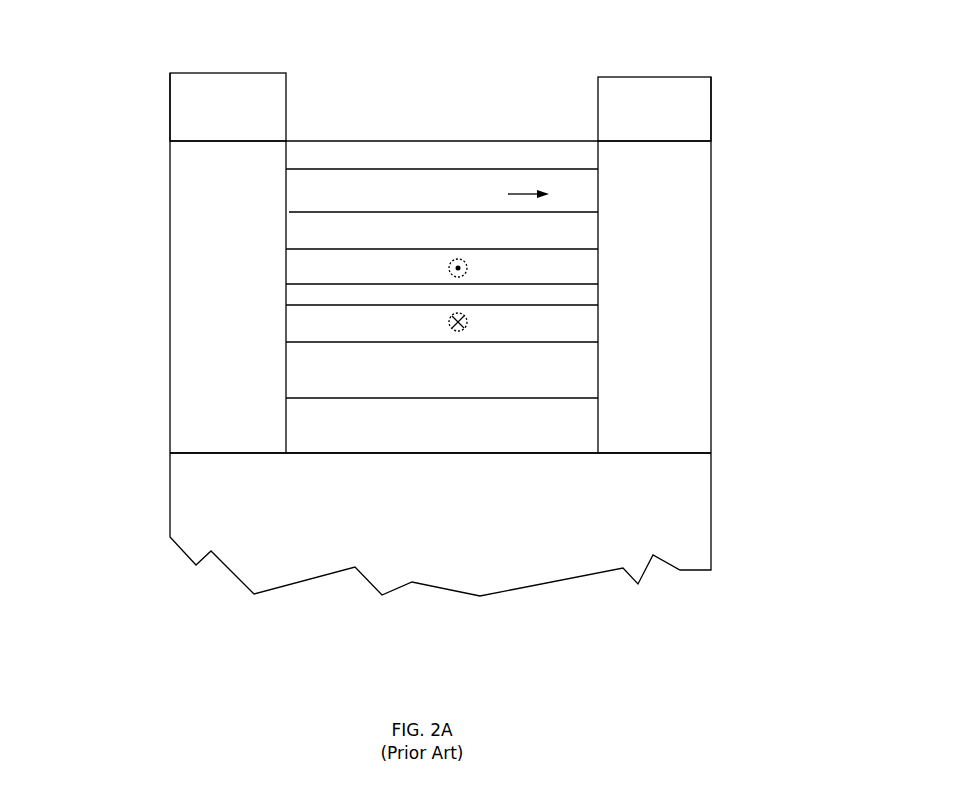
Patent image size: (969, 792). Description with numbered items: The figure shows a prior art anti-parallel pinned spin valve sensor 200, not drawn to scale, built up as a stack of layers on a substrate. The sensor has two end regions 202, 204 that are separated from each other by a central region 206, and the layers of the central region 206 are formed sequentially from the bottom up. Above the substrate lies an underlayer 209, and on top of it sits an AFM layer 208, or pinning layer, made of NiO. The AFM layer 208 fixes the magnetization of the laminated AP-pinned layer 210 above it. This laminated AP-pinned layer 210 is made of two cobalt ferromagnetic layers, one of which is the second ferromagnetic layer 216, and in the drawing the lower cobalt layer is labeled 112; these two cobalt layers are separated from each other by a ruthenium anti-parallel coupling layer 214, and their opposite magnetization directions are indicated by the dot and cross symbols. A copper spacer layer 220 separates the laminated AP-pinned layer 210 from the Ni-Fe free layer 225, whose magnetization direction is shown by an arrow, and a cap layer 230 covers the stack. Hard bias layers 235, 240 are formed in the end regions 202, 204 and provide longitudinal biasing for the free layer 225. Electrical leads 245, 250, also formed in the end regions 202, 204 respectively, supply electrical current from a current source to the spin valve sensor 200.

The AP-pinned spin valve sensor 200 is at (426, 375).
The end region 202 is at (167, 62).
The end region 204 is at (708, 65).
The central region 206 is at (594, 63).
The AFM layer 208 is at (583, 367).
The underlayer 209 is at (583, 417).
The laminated AP-pinned layer 210 is at (461, 295).
The Co ferromagnetic layer 112 is at (587, 317).
The ruthenium anti-parallel coupling layer 214 is at (590, 299).
The second ferromagnetic layer 216 is at (586, 257).
The copper spacer layer 220 is at (580, 229).
The Ni-Fe free layer 225 is at (571, 191).
The cap layer 230 is at (581, 156).
The hard bias layer 235 is at (226, 437).
The hard bias layer 240 is at (682, 440).
The electrical lead 245 is at (171, 112).
The electrical lead 250 is at (712, 115).